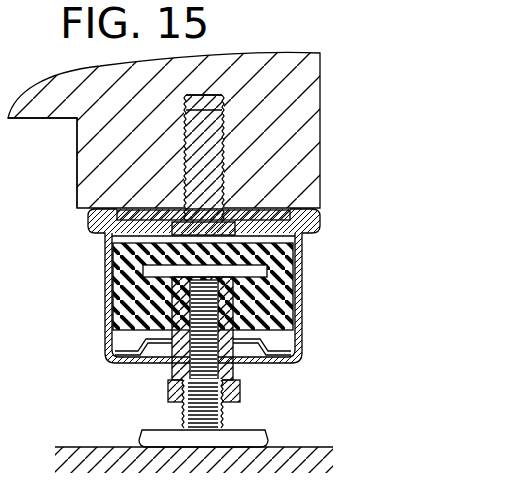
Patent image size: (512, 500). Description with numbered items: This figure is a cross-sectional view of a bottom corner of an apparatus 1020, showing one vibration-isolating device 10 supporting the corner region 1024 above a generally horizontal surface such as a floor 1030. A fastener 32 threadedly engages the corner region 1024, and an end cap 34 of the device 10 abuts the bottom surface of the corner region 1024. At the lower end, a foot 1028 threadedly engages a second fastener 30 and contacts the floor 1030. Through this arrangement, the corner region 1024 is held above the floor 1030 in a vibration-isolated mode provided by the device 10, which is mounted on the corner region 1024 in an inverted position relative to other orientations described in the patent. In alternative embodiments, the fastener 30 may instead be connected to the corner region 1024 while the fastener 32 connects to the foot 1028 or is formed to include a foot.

The vibration-isolating device 10 is at (88, 277).
The fastener 30 is at (224, 368).
The fastener 32 is at (198, 158).
The end cap 34 is at (244, 192).
The apparatus 1020 is at (62, 146).
The corner region 1024 is at (265, 98).
The foot 1028 is at (238, 438).
The floor 1030 is at (100, 447).